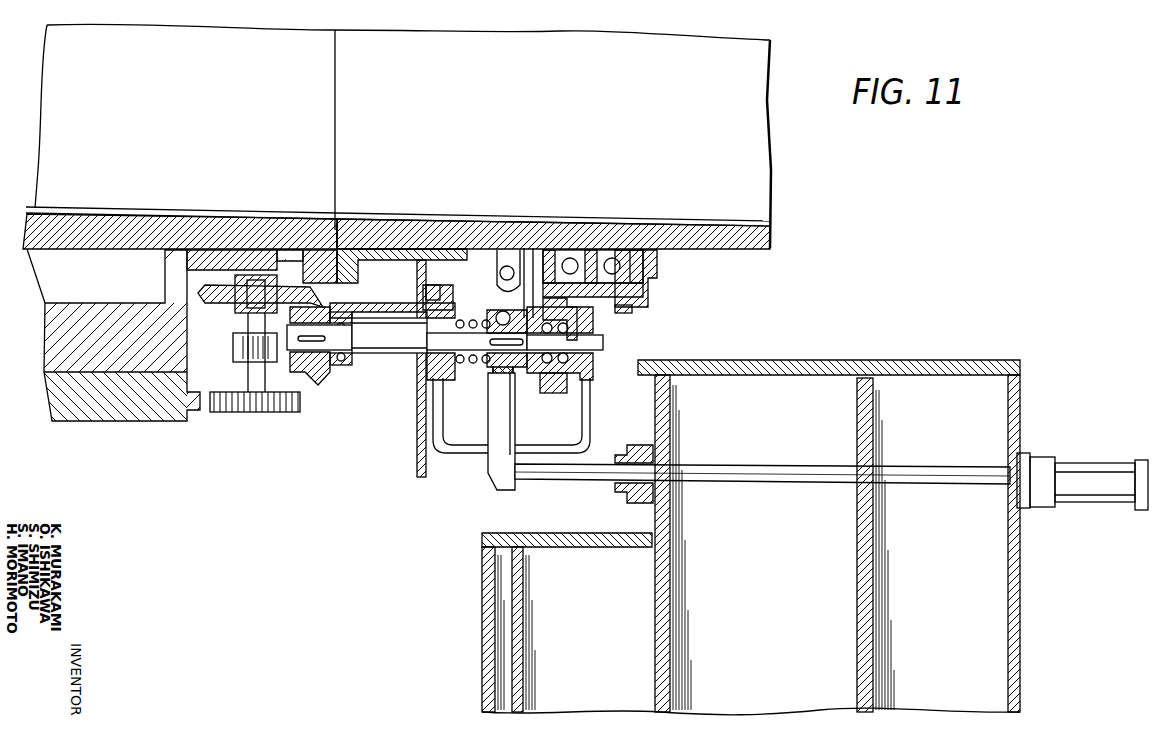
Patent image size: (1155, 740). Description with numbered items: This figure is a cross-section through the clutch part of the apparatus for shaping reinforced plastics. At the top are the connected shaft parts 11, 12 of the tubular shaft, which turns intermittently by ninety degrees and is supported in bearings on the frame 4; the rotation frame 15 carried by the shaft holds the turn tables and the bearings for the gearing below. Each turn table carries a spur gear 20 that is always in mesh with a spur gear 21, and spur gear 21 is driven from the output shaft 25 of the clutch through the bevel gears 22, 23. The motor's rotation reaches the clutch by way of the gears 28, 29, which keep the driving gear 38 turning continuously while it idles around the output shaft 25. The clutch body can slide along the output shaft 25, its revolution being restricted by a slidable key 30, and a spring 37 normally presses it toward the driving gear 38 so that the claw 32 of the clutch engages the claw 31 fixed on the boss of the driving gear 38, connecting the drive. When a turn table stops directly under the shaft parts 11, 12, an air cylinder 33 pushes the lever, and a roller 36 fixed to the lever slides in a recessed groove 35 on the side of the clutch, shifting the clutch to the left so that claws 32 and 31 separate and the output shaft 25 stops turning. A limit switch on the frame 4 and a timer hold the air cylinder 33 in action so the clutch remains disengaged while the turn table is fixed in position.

The frame 4 is at (1017, 605).
The shaft part 11 is at (540, 230).
The shaft part 12 is at (245, 222).
The rotation frame 15 is at (413, 280).
The spur gear 20 is at (197, 403).
The spur gear 21 is at (248, 405).
The bevel gear 22 is at (217, 287).
The bevel gear 23 is at (305, 380).
The output shaft 25 is at (397, 350).
The gear 28 is at (625, 308).
The gear 29 is at (577, 298).
The slidable key 30 is at (493, 360).
The claw 31 is at (557, 240).
The claw 32 is at (527, 248).
The air cylinder 33 is at (1090, 488).
The recessed groove 35 is at (500, 370).
The roller 36 is at (500, 380).
The spring 37 is at (458, 316).
The driving gear 38 is at (547, 393).